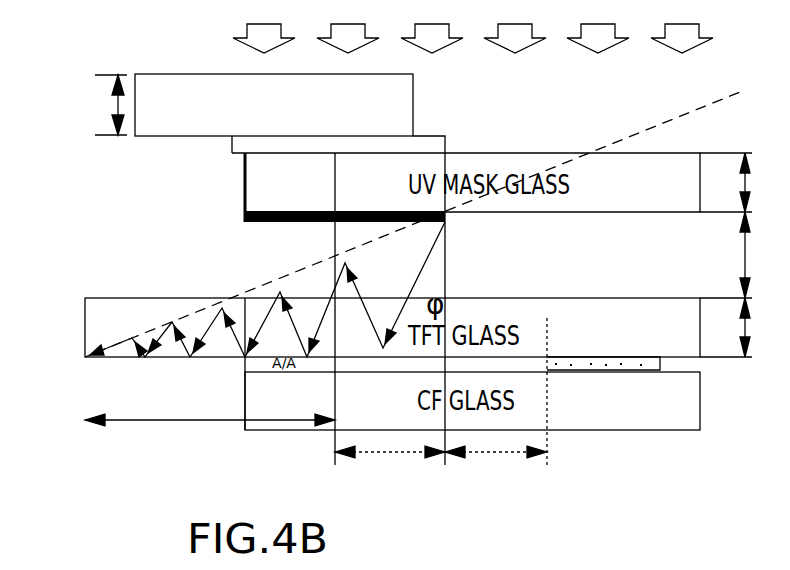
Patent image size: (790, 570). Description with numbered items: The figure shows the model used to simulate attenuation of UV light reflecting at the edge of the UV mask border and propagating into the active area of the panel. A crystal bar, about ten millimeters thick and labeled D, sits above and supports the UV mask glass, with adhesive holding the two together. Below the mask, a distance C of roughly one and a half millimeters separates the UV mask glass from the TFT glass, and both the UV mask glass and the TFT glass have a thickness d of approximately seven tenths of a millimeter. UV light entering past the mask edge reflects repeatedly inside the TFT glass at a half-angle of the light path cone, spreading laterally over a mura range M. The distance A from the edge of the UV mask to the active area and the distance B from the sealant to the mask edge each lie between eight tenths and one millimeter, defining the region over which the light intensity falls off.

The crystal bar D is at (256, 113).
The thickness d is at (733, 255).
The distance separating the UV mask glass and the TFT C is at (703, 255).
The mura range M is at (210, 403).
The distance from the edge of the UV mask to the active area A is at (390, 487).
The distance from the sealant to the edge of the mask B is at (496, 487).